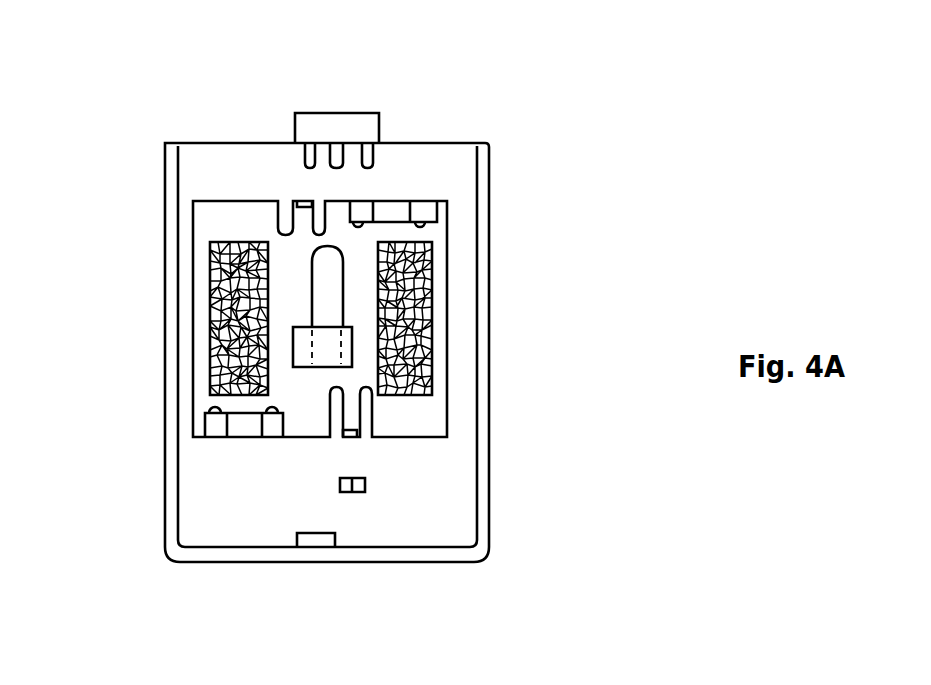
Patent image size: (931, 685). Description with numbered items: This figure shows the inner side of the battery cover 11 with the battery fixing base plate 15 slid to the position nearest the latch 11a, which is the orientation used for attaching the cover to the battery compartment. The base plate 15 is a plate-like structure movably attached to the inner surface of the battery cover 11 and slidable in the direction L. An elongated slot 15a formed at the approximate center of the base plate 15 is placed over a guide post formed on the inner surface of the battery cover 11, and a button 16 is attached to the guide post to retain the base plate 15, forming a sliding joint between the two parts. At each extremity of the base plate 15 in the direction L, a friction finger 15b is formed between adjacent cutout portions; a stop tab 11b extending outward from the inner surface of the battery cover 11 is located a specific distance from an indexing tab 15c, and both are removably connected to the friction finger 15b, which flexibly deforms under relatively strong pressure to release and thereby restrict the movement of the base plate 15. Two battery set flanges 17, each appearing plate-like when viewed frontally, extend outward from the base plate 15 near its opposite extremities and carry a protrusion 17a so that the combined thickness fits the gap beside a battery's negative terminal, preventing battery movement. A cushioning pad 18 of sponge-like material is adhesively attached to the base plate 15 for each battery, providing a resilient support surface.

The battery cover 11 is at (420, 165).
The latch 11a is at (328, 125).
The stop tab 11b is at (347, 438).
The battery fixing base plate 15 is at (212, 218).
The slot 15a is at (338, 297).
The friction finger 15b is at (288, 220).
The indexing tab 15c is at (298, 202).
The button 16 is at (303, 357).
The battery set flange 17 is at (418, 208).
The protrusion 17a is at (418, 227).
The cushioning pad 18 is at (425, 316).